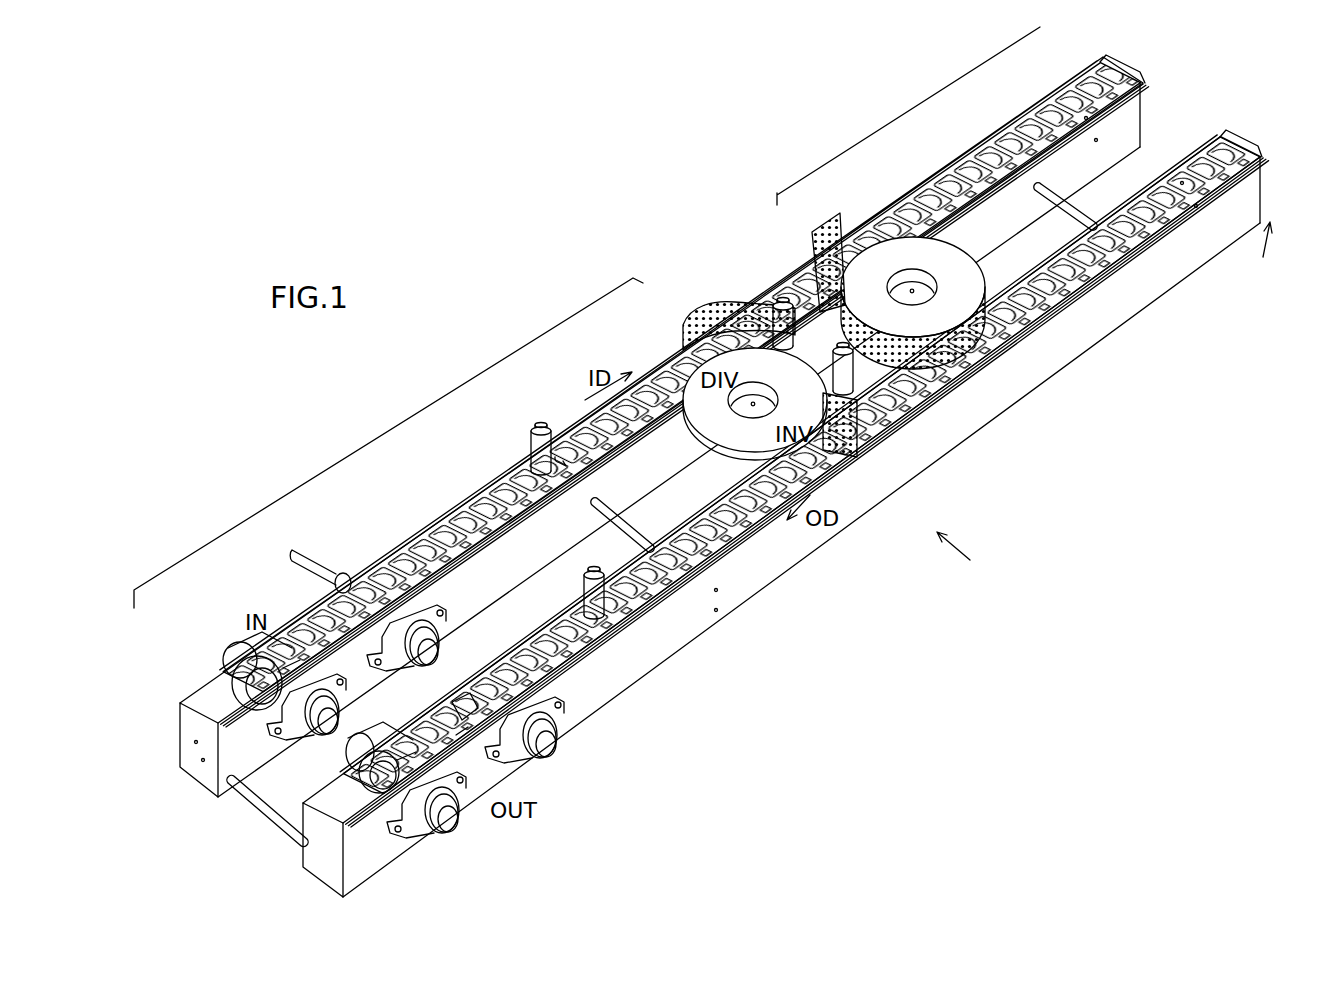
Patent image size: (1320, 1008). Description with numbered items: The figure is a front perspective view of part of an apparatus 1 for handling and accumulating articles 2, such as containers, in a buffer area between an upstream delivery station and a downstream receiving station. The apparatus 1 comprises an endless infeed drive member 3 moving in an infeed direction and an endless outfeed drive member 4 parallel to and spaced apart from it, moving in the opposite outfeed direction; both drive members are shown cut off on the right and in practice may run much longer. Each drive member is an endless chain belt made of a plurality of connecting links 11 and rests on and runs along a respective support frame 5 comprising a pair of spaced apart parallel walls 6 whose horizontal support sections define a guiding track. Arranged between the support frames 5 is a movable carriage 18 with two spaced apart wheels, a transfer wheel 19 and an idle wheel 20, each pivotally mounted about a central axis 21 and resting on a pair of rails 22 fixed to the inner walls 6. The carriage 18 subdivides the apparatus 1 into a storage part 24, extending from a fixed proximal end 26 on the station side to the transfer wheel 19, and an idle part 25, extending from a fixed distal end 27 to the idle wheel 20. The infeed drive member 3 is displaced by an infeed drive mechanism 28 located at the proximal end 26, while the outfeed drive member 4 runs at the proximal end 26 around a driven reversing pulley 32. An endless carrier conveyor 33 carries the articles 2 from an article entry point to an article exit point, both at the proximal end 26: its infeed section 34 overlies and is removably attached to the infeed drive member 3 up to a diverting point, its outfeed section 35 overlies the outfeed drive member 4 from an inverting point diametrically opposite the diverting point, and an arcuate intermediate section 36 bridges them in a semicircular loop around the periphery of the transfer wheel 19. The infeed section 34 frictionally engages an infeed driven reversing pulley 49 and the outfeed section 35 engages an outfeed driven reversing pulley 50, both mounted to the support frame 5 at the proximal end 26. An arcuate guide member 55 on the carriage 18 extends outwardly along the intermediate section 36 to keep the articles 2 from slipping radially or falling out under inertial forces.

The apparatus 1 is at (964, 557).
The articles 2 is at (535, 450).
The endless infeed drive member 3 is at (437, 578).
The endless outfeed drive member 4 is at (550, 667).
The support frame 5 is at (230, 768).
The walls 6 is at (180, 750).
The connecting links 11 is at (467, 550).
The movable carriage 18 is at (993, 258).
The transfer wheel 19 is at (723, 438).
The idle wheel 20 is at (1023, 327).
The central axis 21 is at (753, 408).
The rails 22 is at (1168, 168).
The storage part 24 is at (388, 443).
The idle part 25 is at (908, 116).
The proximal end 26 is at (230, 819).
The distal end 27 is at (1249, 269).
The infeed drive mechanism 28 is at (327, 590).
The driven reversing pulley 32 is at (455, 705).
The endless carrier conveyor 33 is at (992, 185).
The infeed section 34 is at (457, 500).
The outfeed section 35 is at (658, 583).
The arcuate intermediate section 36 is at (757, 300).
The infeed driven reversing pulley 49 is at (247, 642).
The outfeed driven reversing pulley 50 is at (353, 800).
The arcuate guide member 55 is at (712, 305).